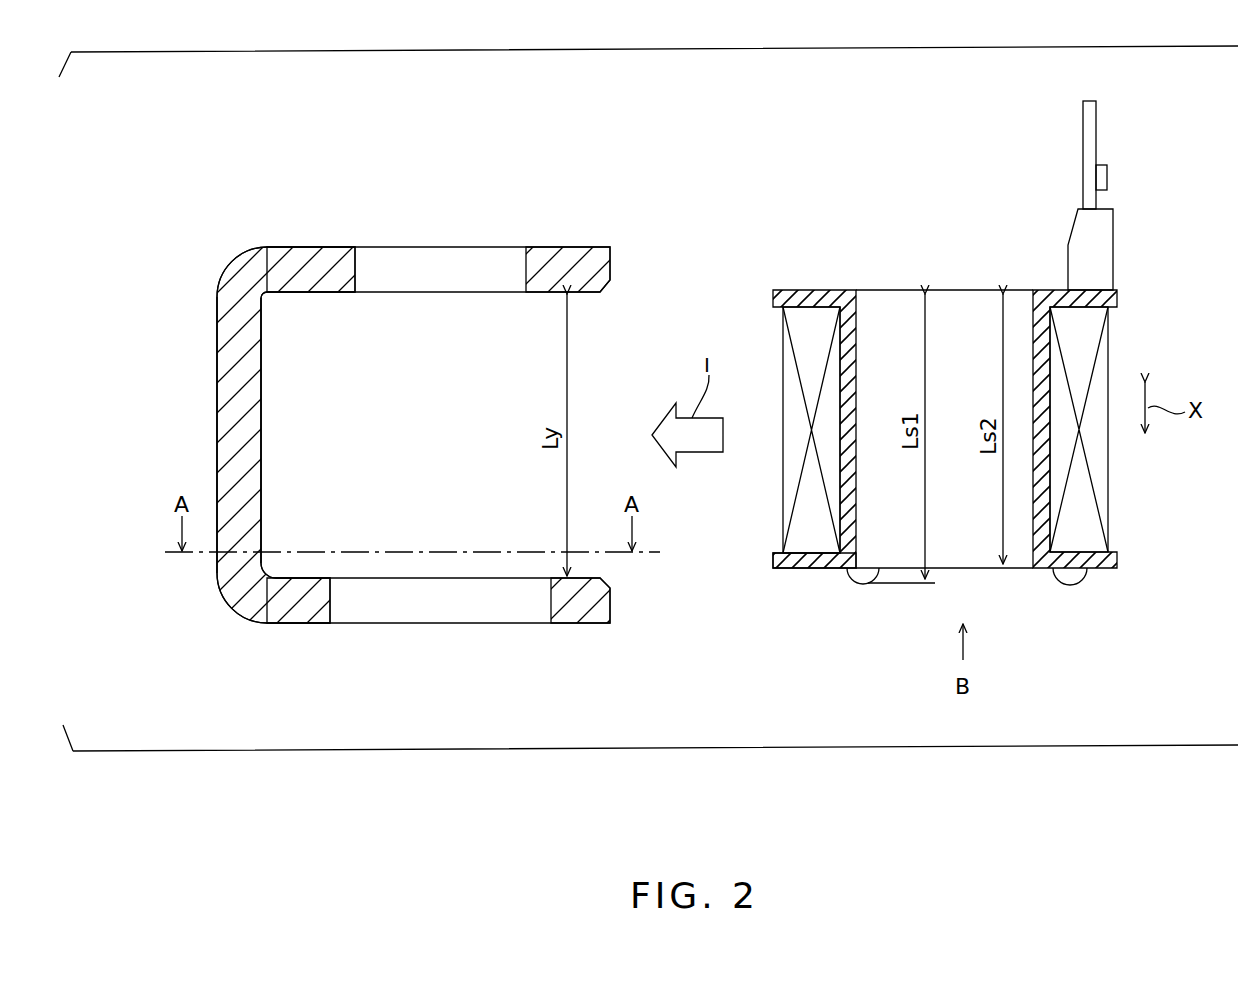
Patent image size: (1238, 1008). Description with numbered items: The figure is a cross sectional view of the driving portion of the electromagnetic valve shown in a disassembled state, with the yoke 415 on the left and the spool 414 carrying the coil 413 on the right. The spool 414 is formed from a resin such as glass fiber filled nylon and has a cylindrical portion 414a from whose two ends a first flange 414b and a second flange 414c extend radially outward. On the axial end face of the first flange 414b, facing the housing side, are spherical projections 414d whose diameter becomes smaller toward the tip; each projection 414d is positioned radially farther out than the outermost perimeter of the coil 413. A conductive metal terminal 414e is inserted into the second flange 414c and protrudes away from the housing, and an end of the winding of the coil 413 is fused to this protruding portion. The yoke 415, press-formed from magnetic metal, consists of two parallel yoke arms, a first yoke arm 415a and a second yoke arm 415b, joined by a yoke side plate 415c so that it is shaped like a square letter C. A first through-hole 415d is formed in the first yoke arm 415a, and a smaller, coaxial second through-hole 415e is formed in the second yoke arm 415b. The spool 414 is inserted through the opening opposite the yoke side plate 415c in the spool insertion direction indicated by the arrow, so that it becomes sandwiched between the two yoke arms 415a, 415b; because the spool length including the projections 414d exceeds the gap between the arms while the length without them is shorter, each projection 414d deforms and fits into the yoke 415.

The coil 413 is at (1115, 330).
The spool 414 is at (984, 374).
The cylindrical portion 414a is at (1043, 358).
The first flange 414b is at (795, 575).
The second flange 414c is at (830, 297).
The projection 414d is at (862, 580).
The terminal 414e is at (1085, 131).
The yoke 415 is at (230, 250).
The first yoke arm 415a is at (575, 606).
The second yoke arm 415b is at (560, 258).
The yoke side plate 415c is at (233, 395).
The first through-hole 415d is at (335, 605).
The second through-hole 415e is at (357, 262).